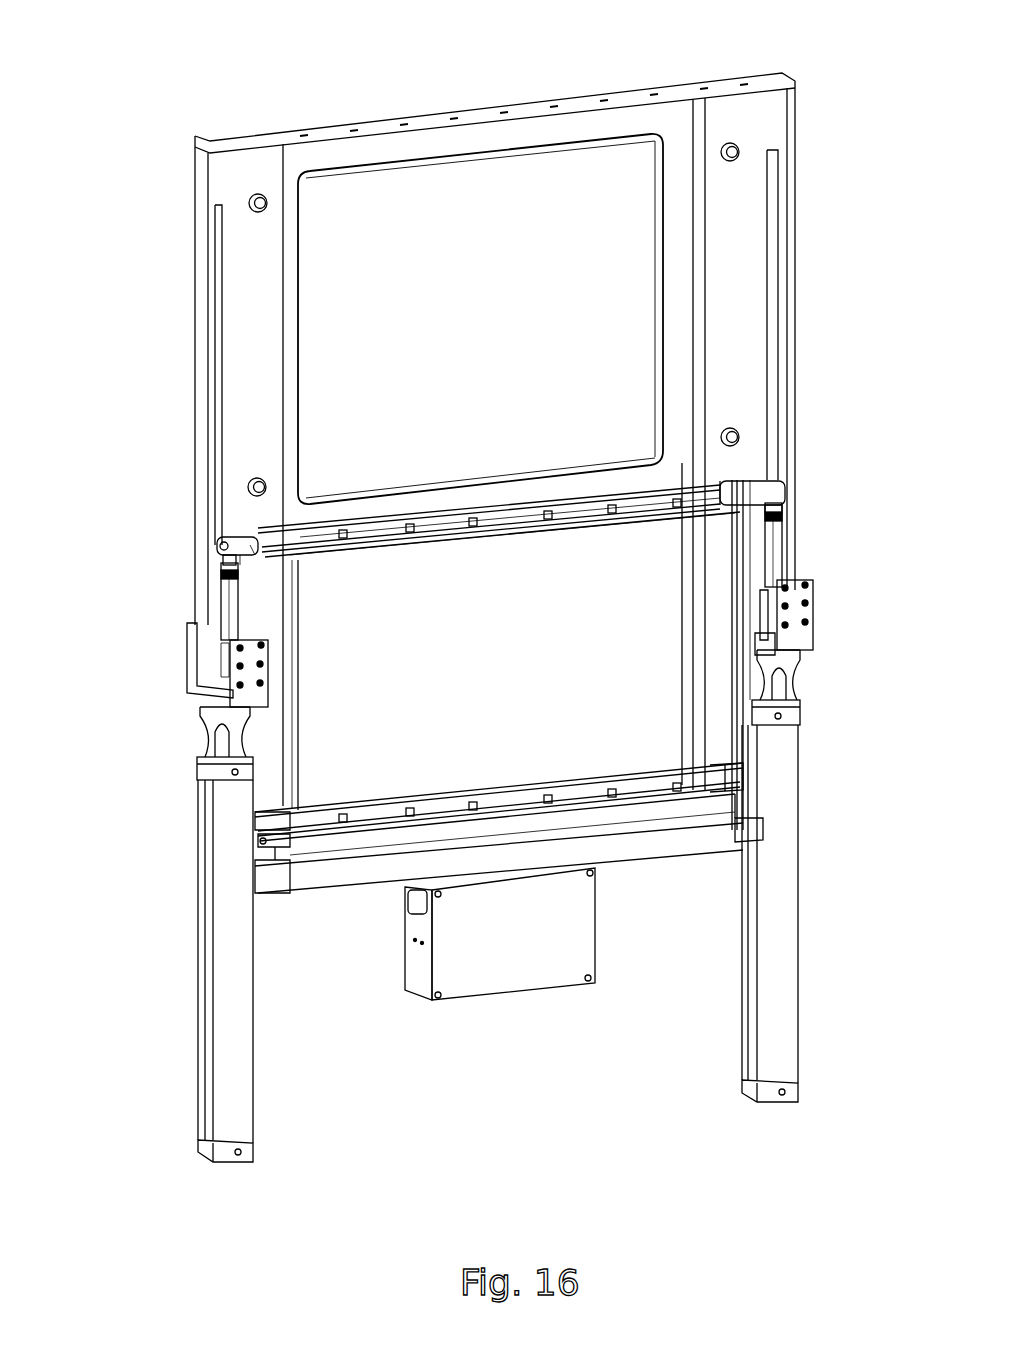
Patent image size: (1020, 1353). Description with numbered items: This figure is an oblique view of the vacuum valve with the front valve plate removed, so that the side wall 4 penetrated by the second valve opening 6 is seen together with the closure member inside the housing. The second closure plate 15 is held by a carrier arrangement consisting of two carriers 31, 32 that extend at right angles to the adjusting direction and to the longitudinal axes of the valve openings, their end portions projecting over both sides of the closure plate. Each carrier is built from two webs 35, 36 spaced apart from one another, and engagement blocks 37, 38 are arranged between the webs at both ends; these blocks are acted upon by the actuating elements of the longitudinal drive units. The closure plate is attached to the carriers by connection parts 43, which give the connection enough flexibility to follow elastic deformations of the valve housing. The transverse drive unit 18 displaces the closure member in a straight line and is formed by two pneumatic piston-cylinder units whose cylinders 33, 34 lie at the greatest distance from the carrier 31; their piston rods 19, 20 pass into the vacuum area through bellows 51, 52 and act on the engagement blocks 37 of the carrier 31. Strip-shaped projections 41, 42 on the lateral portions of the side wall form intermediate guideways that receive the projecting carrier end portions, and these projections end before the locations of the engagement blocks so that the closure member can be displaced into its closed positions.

The side wall 4 is at (488, 135).
The second valve opening 6 is at (378, 190).
The second closure plate 15 is at (322, 731).
The transverse drive unit 18 is at (733, 919).
The piston rod 19 is at (228, 558).
The piston rod 20 is at (783, 498).
The carrier 31 is at (662, 472).
The carrier 32 is at (657, 761).
The cylinder 33 is at (232, 942).
The cylinder 34 is at (783, 912).
The web 35 is at (335, 522).
The web 36 is at (330, 552).
The engagement block 37 is at (757, 488).
The engagement block 38 is at (737, 778).
The strip-shaped projection 41 is at (780, 185).
The strip-shaped projection 42 is at (737, 570).
The connection part 43 is at (441, 542).
The bellows 51 is at (230, 612).
The bellows 52 is at (775, 547).